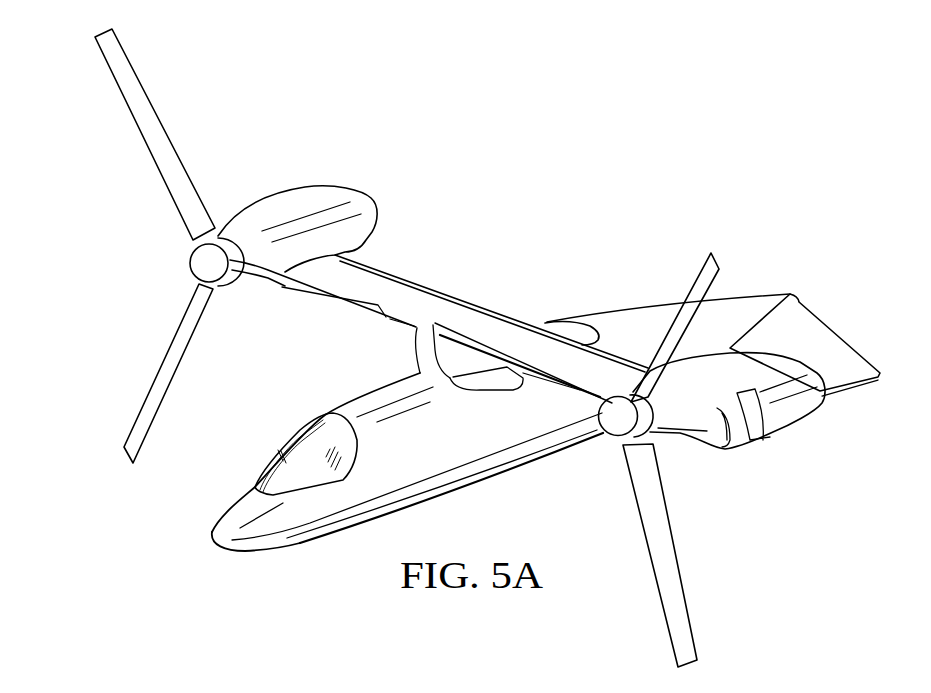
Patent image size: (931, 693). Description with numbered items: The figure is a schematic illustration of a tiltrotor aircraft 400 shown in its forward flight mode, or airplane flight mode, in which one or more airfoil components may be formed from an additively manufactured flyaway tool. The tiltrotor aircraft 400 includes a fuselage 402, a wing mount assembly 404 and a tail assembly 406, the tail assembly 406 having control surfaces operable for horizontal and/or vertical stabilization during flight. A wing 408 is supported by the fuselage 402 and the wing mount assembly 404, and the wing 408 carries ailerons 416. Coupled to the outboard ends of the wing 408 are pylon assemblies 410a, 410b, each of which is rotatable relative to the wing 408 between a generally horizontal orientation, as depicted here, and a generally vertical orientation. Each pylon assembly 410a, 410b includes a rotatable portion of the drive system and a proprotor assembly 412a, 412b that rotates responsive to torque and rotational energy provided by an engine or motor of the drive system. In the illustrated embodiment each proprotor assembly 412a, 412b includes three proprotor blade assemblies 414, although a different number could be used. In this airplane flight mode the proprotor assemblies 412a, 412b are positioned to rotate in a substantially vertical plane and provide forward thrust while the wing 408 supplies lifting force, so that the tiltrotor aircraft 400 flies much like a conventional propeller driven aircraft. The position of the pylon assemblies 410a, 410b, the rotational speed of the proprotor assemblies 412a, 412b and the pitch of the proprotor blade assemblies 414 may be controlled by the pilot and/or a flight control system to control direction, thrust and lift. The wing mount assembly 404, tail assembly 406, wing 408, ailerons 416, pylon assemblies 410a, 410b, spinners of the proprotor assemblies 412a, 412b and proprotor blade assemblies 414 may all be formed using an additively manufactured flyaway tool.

The tiltrotor aircraft 400 is at (544, 217).
The fuselage 402 is at (320, 538).
The wing mount assembly 404 is at (547, 322).
The tail assembly 406 is at (814, 337).
The wing 408 is at (440, 310).
The pylon assembly 410a is at (780, 433).
The pylon assembly 410b is at (302, 190).
The proprotor assembly 412a is at (620, 427).
The proprotor assembly 412b is at (199, 263).
The proprotor blade assemblies 414 is at (109, 74).
The ailerons 416 is at (390, 270).